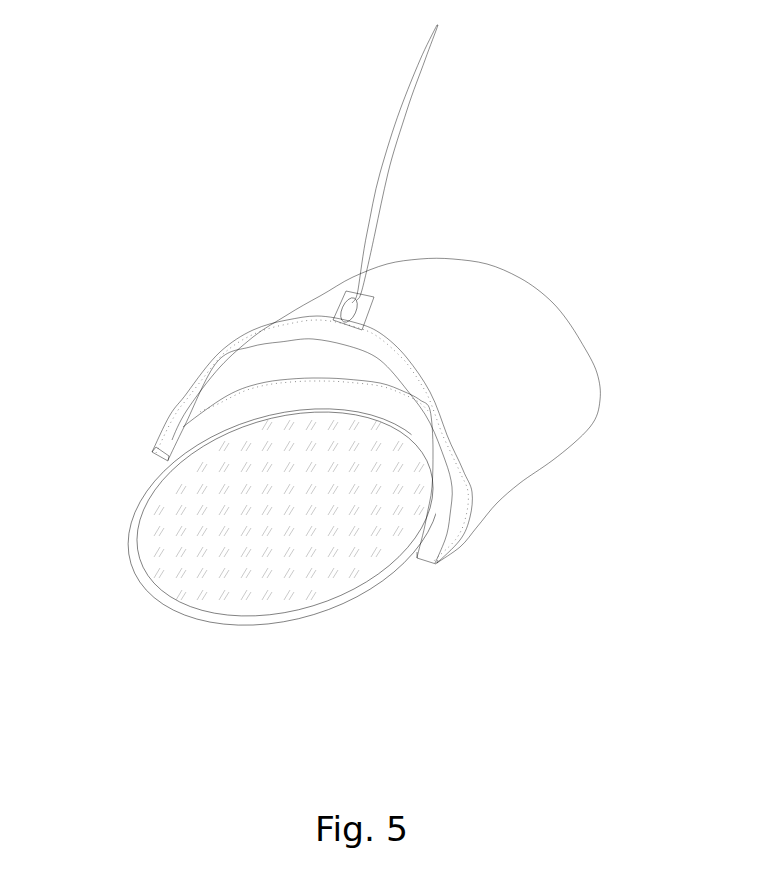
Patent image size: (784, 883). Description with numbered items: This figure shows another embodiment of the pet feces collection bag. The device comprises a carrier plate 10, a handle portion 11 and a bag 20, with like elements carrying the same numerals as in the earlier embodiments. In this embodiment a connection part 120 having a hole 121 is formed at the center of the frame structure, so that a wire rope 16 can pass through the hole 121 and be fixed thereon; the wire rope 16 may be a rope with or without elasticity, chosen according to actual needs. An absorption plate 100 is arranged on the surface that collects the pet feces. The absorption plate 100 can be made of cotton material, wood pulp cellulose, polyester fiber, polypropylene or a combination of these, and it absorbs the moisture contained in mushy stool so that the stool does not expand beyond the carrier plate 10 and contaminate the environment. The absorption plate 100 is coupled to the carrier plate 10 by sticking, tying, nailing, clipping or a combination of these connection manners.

The carrier plate 10 is at (132, 527).
The absorption plate 100 is at (295, 565).
The handle portion 11 is at (220, 373).
The connection part 120 is at (337, 320).
The hole 121 is at (348, 312).
The wire rope 16 is at (393, 137).
The bag 20 is at (533, 310).